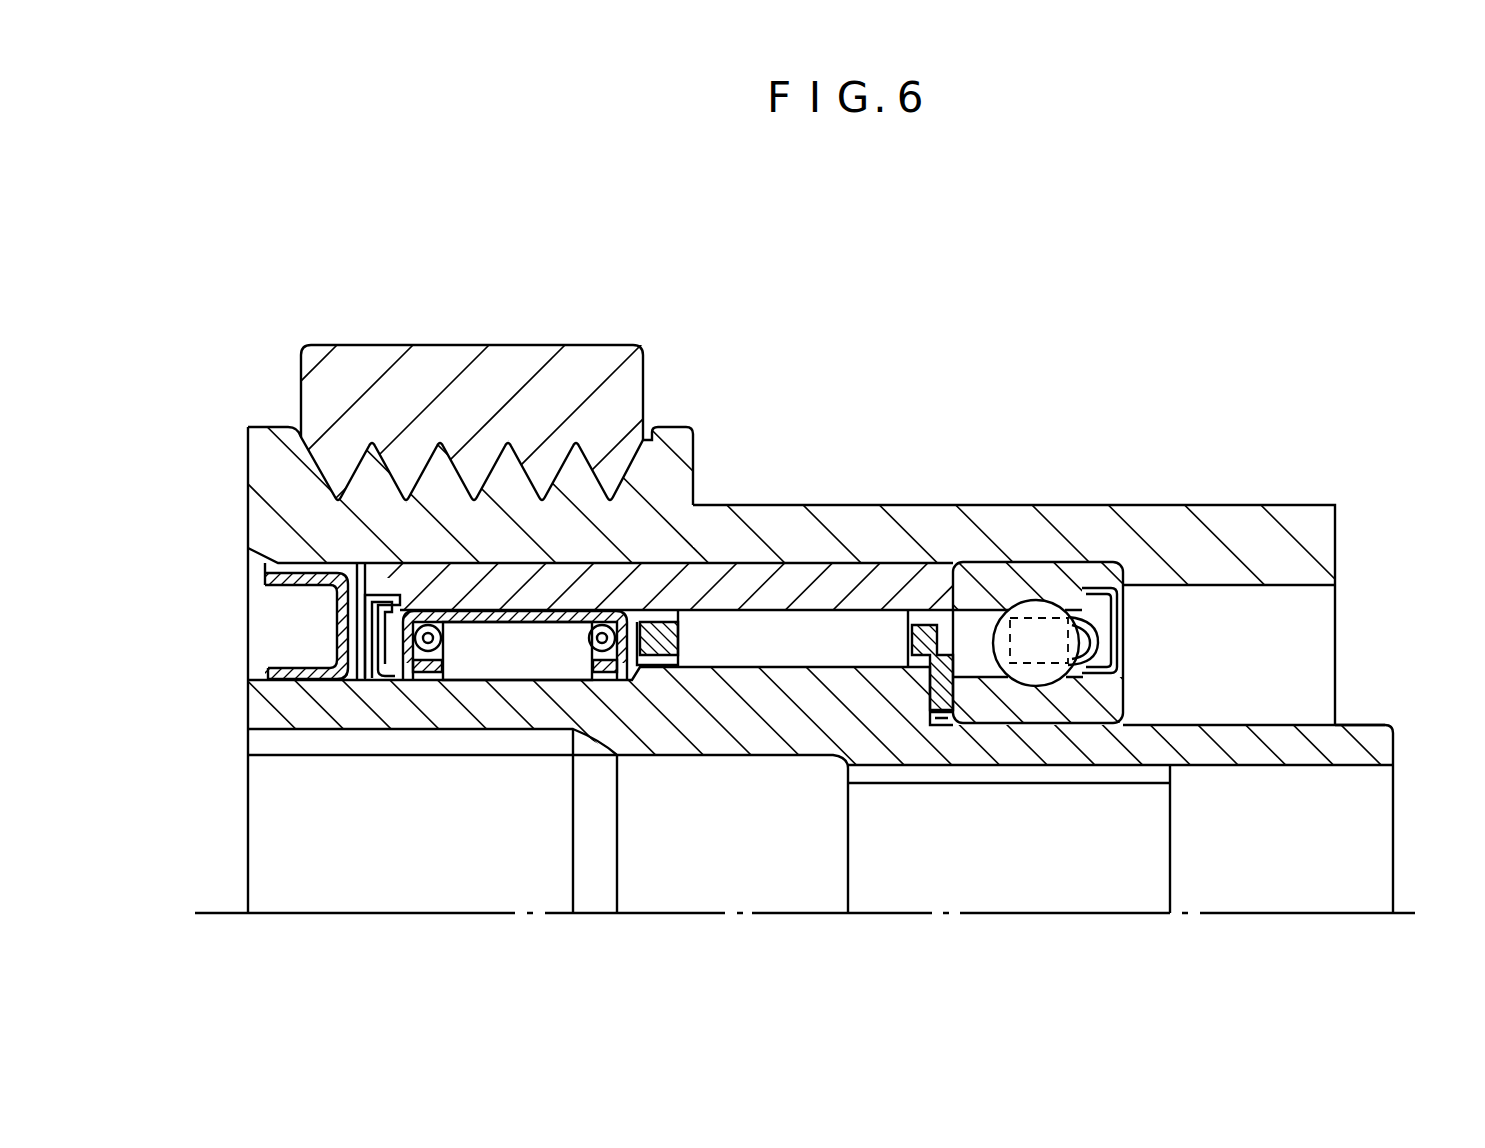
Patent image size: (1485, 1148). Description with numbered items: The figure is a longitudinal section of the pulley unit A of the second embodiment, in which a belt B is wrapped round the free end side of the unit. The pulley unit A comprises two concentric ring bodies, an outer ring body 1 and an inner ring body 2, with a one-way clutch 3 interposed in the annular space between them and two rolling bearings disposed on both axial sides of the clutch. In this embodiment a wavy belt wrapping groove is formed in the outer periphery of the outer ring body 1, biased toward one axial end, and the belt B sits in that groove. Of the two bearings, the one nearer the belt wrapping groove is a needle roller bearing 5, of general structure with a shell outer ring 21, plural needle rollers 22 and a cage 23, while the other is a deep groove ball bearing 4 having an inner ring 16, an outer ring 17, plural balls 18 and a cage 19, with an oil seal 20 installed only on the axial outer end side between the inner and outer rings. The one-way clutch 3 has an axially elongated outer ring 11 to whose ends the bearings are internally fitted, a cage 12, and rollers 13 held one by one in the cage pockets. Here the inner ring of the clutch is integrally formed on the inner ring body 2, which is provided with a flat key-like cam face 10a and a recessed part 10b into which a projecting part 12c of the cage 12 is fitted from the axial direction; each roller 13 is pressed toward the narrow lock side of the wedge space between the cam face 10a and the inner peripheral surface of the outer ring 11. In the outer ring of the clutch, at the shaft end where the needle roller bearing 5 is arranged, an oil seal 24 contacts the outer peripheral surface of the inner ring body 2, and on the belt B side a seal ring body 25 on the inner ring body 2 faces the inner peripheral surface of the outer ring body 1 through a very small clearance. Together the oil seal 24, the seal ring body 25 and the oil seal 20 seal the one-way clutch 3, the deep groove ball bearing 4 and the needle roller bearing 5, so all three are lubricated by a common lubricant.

The outer ring body 1 is at (1305, 520).
The inner ring body 2 is at (1376, 742).
The one-way clutch 3 is at (704, 546).
The rolling bearing 4 is at (845, 574).
The needle roller bearing 5 is at (667, 574).
The cam face 10a is at (784, 668).
The recessed part 10b is at (946, 712).
The outer ring 11 is at (648, 568).
The cage 12 is at (660, 636).
The projecting part 12c is at (955, 697).
The roller 13 is at (727, 628).
The inner ring 16 is at (1093, 715).
The outer ring 17 is at (1095, 575).
The ball 18 is at (1026, 600).
The cage 19 is at (1110, 643).
The oil seal 20 is at (1120, 606).
The shell outer ring 21 is at (487, 608).
The needle roller 22 is at (503, 667).
The cage 23 is at (428, 667).
The oil seal 24 is at (367, 628).
The seal ring body 25 is at (273, 672).
The pulley unit A is at (1075, 320).
The belt B is at (428, 362).